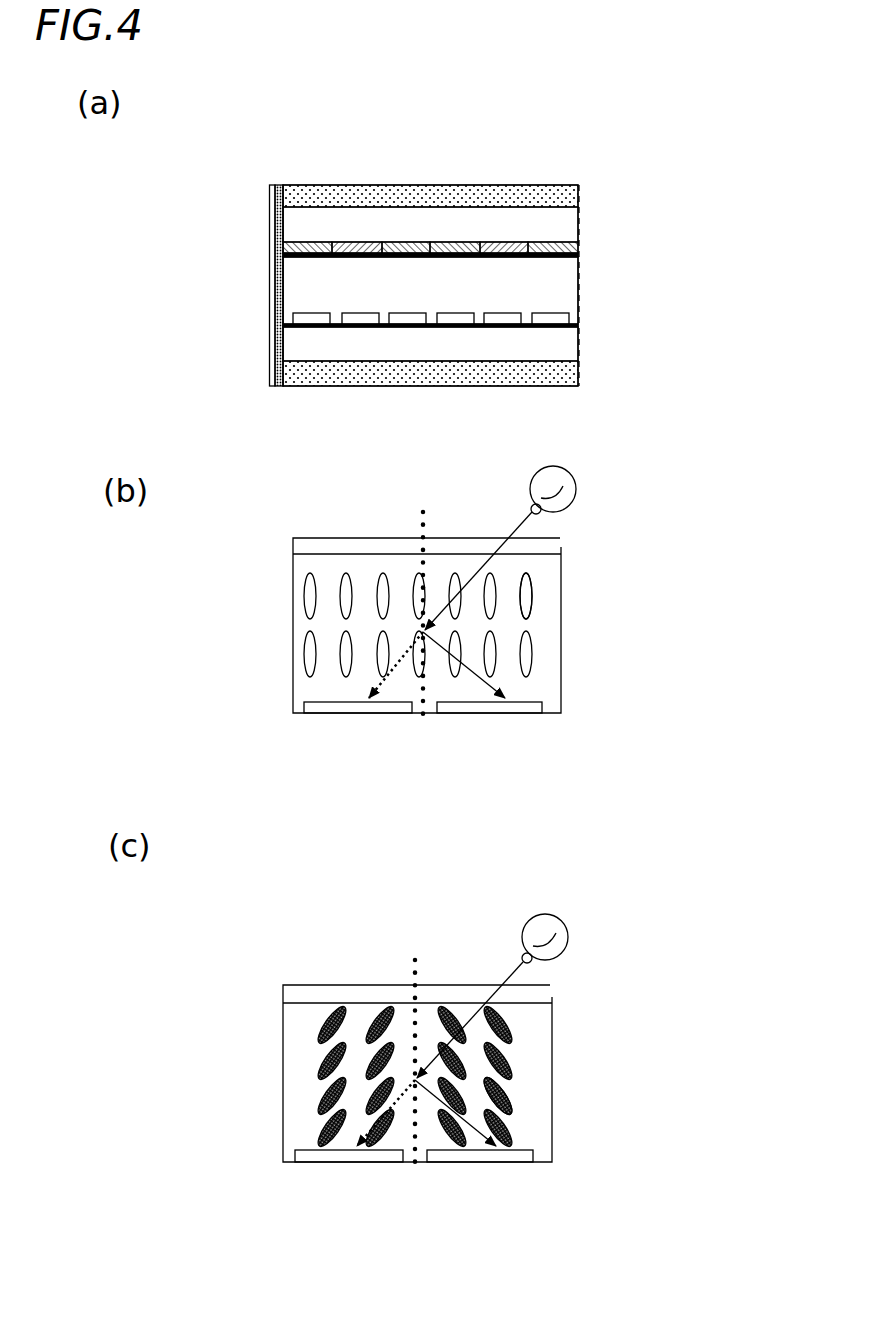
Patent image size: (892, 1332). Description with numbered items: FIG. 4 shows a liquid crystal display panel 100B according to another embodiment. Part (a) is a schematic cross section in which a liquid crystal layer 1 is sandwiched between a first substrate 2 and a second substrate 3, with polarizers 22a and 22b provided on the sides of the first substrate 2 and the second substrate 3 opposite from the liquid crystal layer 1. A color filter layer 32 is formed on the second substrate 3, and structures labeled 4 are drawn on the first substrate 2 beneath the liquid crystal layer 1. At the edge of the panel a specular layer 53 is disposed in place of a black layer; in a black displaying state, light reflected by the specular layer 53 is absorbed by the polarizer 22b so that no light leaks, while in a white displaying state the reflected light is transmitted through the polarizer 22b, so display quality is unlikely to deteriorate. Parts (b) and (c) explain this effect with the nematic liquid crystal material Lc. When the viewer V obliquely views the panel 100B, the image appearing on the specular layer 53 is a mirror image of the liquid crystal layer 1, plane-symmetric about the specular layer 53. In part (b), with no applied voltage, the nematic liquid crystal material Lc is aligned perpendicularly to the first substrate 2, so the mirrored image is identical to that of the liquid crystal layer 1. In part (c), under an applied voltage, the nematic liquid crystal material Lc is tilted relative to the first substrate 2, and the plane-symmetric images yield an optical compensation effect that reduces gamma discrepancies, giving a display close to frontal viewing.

The liquid crystal display panel 100B is at (724, 184).
The liquid crystal layer 1 is at (567, 278).
The first substrate 2 is at (567, 347).
The second substrate 3 is at (567, 227).
The pixel electrodes 4 is at (567, 313).
The polarizer 22a is at (575, 375).
The polarizer 22b is at (573, 193).
The color filter layer 32 is at (453, 243).
The specular layer 53 is at (278, 292).
The viewer V is at (568, 477).
The nematic liquid crystal material Lc is at (525, 602).